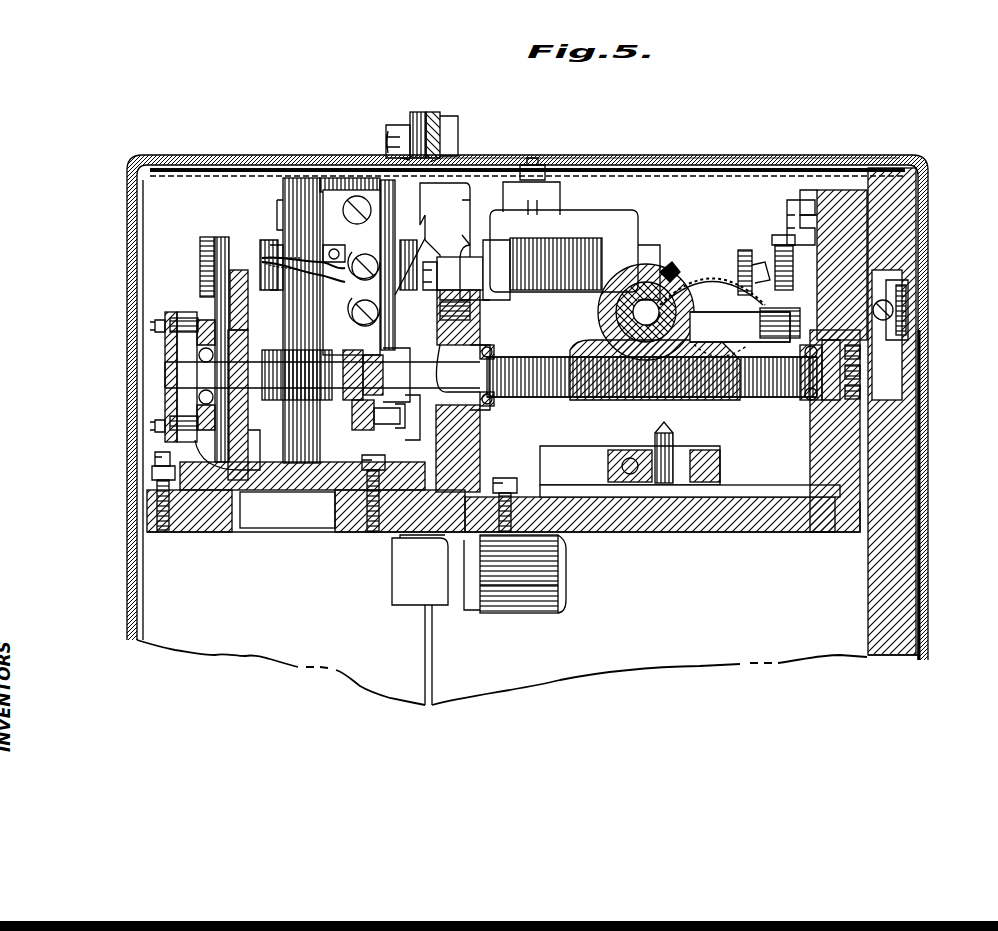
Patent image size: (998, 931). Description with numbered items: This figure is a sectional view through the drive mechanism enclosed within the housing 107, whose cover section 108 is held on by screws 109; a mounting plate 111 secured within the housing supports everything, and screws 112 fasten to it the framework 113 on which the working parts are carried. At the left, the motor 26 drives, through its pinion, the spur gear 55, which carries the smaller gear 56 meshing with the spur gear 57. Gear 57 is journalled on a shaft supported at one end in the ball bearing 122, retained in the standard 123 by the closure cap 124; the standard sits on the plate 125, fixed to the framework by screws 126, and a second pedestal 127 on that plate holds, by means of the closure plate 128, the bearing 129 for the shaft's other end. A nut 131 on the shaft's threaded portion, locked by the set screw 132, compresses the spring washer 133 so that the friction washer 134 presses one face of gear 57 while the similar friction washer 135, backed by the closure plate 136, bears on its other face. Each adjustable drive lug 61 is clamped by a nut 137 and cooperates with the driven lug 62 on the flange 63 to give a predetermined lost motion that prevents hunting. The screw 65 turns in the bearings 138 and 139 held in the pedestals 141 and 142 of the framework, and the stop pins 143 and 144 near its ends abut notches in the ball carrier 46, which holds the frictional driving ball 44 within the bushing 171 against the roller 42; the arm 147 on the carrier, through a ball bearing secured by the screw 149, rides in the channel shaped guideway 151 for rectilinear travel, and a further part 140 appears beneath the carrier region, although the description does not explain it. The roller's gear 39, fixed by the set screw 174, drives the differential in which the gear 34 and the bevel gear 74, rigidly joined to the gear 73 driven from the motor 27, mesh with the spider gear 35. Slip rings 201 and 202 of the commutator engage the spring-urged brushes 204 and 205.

The motor 26 is at (300, 190).
The motor 27 is at (600, 238).
The gear 34 is at (672, 268).
The differential spider gear 35 is at (720, 268).
The gear 39 is at (908, 330).
The roller 42 is at (558, 318).
The frictional driving ball 44 is at (660, 318).
The ball carrier 46 is at (600, 345).
The spur gear 55 is at (220, 245).
The gear 56 is at (322, 375).
The spur gear 57 is at (158, 473).
The adjustable drive lug 61 is at (365, 420).
The driven lug 62 is at (395, 426).
The flange 63 is at (412, 440).
The screw 65 is at (492, 352).
The gear 73 is at (782, 240).
The bevel gear 74 is at (752, 265).
The housing 107 is at (630, 160).
The cover section 108 is at (265, 145).
The screw 109 is at (400, 128).
The mounting plate 111 is at (900, 505).
The screw 112 is at (805, 200).
The framework 113 is at (840, 195).
The ball bearing 122 is at (160, 395).
The standard 123 is at (157, 458).
The closure cap 124 is at (170, 352).
The plate 125 is at (268, 530).
The screw 126 is at (368, 532).
The pedestal 127 is at (352, 511).
The closure plate 128 is at (348, 252).
The bearing 129 is at (430, 303).
The nut 131 is at (248, 400).
The set screw 132 is at (265, 275).
The spring washer 133 is at (207, 262).
The friction washer 134 is at (235, 285).
The friction washer 135 is at (205, 318).
The closure plate 136 is at (200, 375).
The nut 137 is at (376, 375).
The bearing 138 is at (470, 400).
The bearing 139 is at (835, 405).
The nut 140 is at (622, 455).
The pedestal 141 is at (650, 489).
The pedestal 142 is at (830, 495).
The stop pin 143 is at (492, 400).
The stop pin 144 is at (800, 398).
The arm 147 is at (676, 448).
The screw 149 is at (670, 490).
The channel shaped guideway 151 is at (590, 532).
The bushing 171 is at (662, 300).
The set screw 174 is at (893, 313).
The slip ring 201 is at (560, 560).
The slip ring 202 is at (560, 600).
The brush 204 is at (465, 560).
The contact finger 205 is at (500, 560).